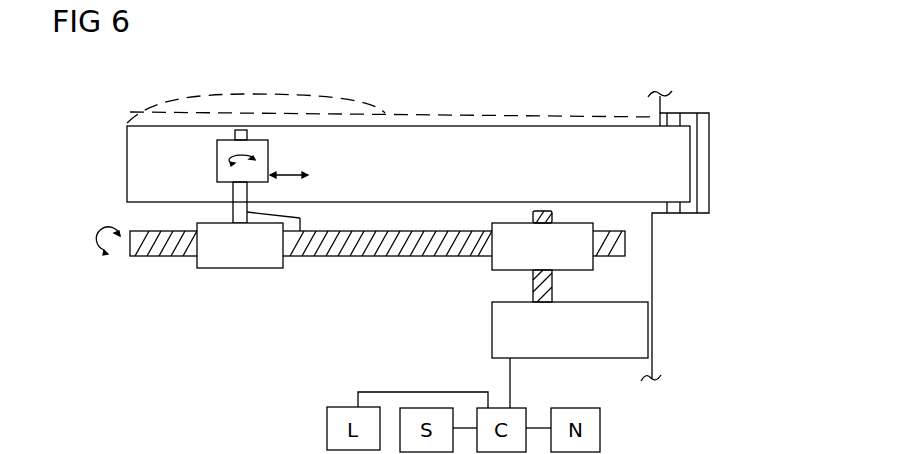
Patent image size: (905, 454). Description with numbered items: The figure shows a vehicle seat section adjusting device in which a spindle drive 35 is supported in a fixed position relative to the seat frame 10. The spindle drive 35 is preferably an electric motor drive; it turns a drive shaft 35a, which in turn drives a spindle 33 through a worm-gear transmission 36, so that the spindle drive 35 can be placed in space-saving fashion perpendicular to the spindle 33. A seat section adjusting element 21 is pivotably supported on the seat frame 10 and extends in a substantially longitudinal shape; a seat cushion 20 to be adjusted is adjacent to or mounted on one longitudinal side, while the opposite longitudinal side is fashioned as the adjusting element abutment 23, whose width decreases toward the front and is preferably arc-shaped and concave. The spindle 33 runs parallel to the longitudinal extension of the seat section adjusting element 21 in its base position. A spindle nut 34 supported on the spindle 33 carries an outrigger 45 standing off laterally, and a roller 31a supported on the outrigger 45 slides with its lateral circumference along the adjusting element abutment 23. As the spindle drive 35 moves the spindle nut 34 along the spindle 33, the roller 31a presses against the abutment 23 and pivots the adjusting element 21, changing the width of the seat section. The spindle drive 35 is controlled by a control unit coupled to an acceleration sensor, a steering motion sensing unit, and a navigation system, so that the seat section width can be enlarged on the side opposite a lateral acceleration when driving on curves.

The seat frame 10 is at (672, 280).
The seat cushion 20 is at (254, 97).
The seat section adjusting element 21 is at (395, 126).
The adjusting element abutment 23 is at (452, 157).
The roller 31a is at (270, 160).
The spindle 33 is at (136, 256).
The spindle nut 34 is at (215, 268).
The spindle drive 35 is at (623, 345).
The drive shaft 35a is at (552, 287).
The worm-gear transmission 36 is at (516, 240).
The outrigger 45 is at (300, 231).